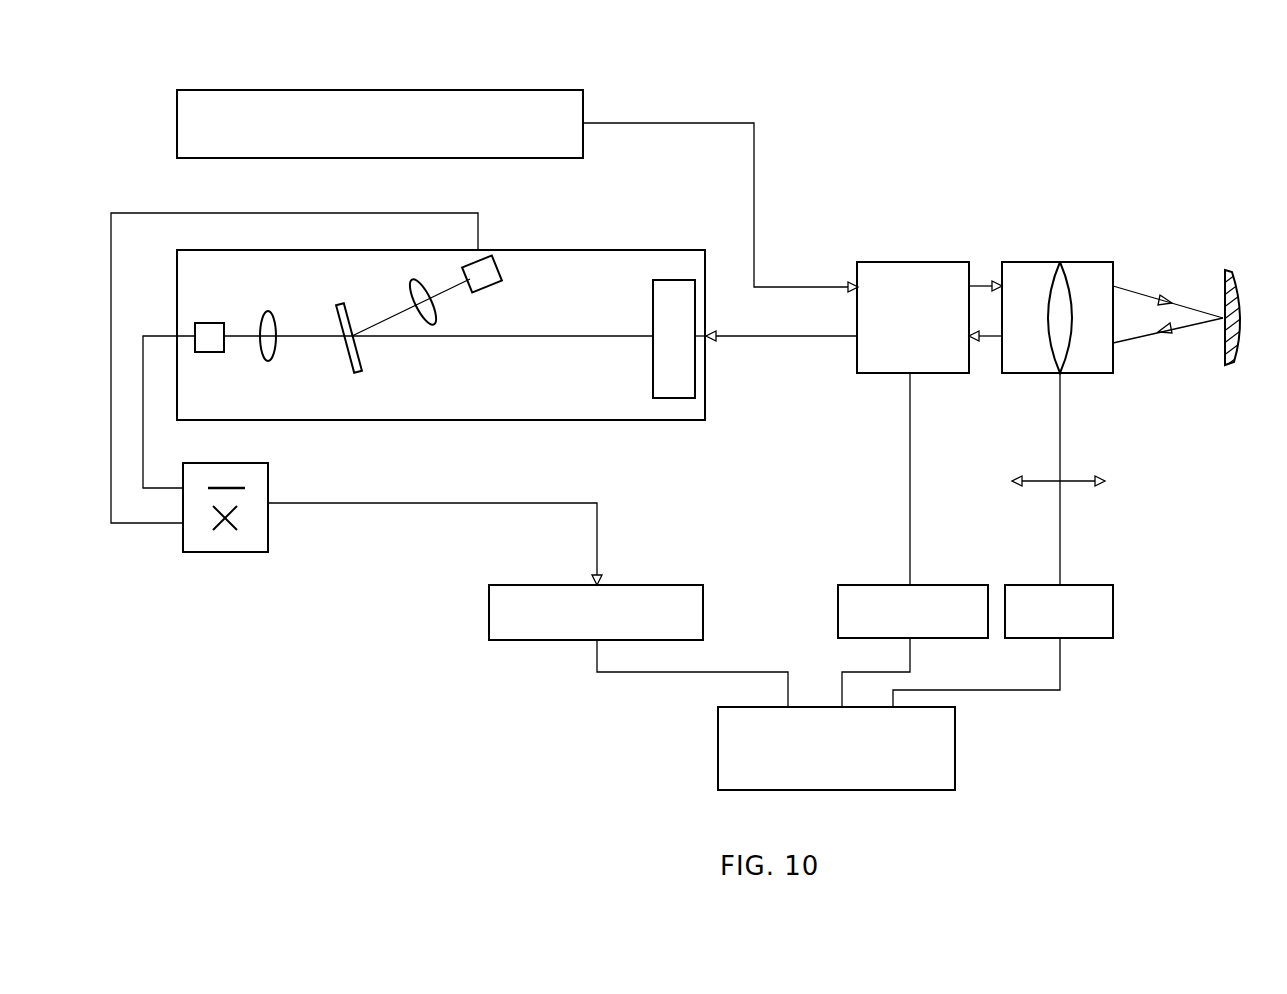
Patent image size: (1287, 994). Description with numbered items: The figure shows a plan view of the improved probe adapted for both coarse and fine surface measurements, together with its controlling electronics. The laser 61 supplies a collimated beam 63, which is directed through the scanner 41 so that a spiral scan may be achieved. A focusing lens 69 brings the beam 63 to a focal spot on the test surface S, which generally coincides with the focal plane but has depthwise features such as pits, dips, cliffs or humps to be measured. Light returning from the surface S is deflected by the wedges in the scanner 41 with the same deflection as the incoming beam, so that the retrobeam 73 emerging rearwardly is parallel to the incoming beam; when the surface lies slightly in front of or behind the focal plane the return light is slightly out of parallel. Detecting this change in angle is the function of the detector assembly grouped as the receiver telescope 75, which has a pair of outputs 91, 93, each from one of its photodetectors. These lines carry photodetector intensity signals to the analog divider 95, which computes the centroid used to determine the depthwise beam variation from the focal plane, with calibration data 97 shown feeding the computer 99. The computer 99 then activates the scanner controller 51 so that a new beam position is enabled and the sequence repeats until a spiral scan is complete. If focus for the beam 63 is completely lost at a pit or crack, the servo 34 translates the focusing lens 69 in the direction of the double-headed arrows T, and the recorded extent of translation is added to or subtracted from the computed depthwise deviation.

The laser 61 is at (447, 90).
The receiver telescope 75 is at (587, 420).
The output 91 is at (111, 405).
The output 93 is at (143, 455).
The analog divider 95 is at (197, 552).
The calibration data 97 is at (489, 617).
The scanner 41 is at (896, 262).
The focusing lens 69 is at (1070, 280).
The collimated beam 63 is at (1140, 290).
The retrobeam 73 is at (1143, 340).
The test surface S is at (1227, 357).
The double-headed arrows T is at (1078, 481).
The scanner controller 51 is at (837, 600).
The servo 34 is at (1113, 610).
The computer 99 is at (955, 757).